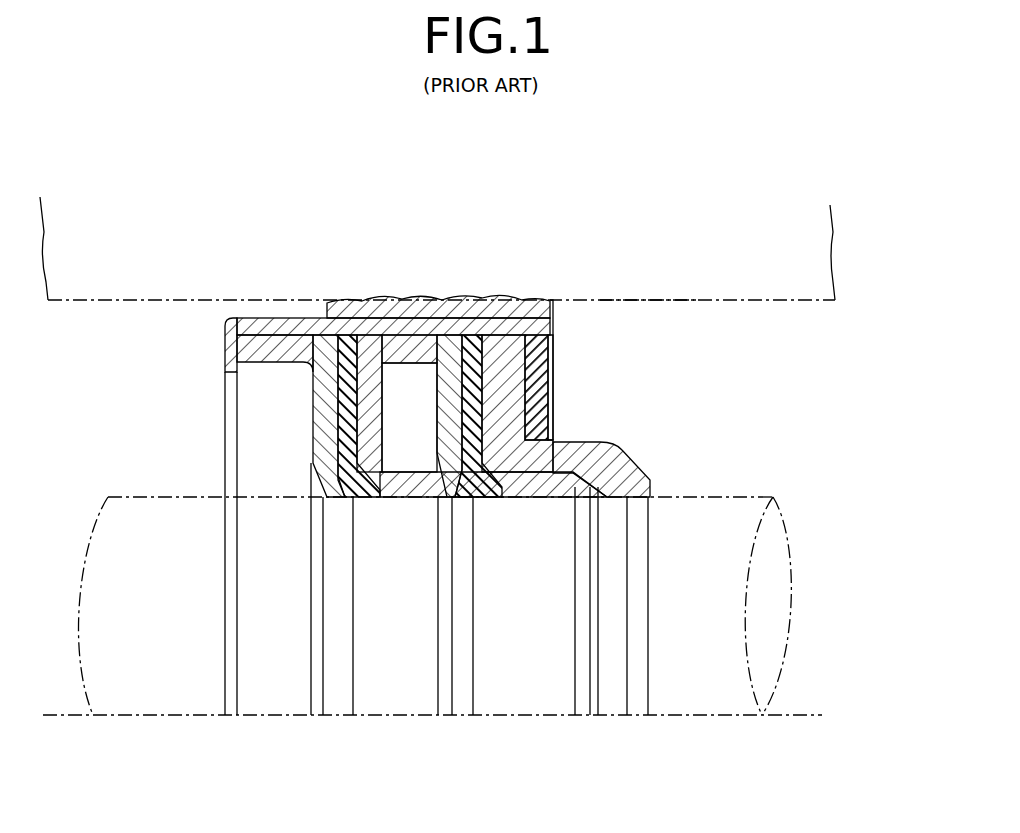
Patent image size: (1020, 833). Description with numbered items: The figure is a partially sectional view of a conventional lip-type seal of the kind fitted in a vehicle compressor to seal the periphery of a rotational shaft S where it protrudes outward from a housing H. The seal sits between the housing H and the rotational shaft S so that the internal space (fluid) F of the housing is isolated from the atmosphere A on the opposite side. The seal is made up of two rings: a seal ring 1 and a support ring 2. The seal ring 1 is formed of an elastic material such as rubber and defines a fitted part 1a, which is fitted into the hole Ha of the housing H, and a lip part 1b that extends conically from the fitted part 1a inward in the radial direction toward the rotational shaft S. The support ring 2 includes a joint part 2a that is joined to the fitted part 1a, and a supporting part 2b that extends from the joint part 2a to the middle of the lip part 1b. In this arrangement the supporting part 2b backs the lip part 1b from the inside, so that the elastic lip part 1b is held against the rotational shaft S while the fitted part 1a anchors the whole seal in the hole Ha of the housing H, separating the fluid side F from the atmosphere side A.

The seal ring 1 is at (459, 355).
The fitted part 1a is at (508, 300).
The lip part 1b is at (627, 454).
The support ring 2 is at (480, 497).
The joint part 2a is at (422, 497).
The supporting part 2b is at (558, 497).
The housing H is at (838, 268).
The hole Ha is at (642, 306).
The atmosphere A is at (146, 419).
The internal space (fluid) F is at (786, 417).
The rotational shaft S is at (742, 496).